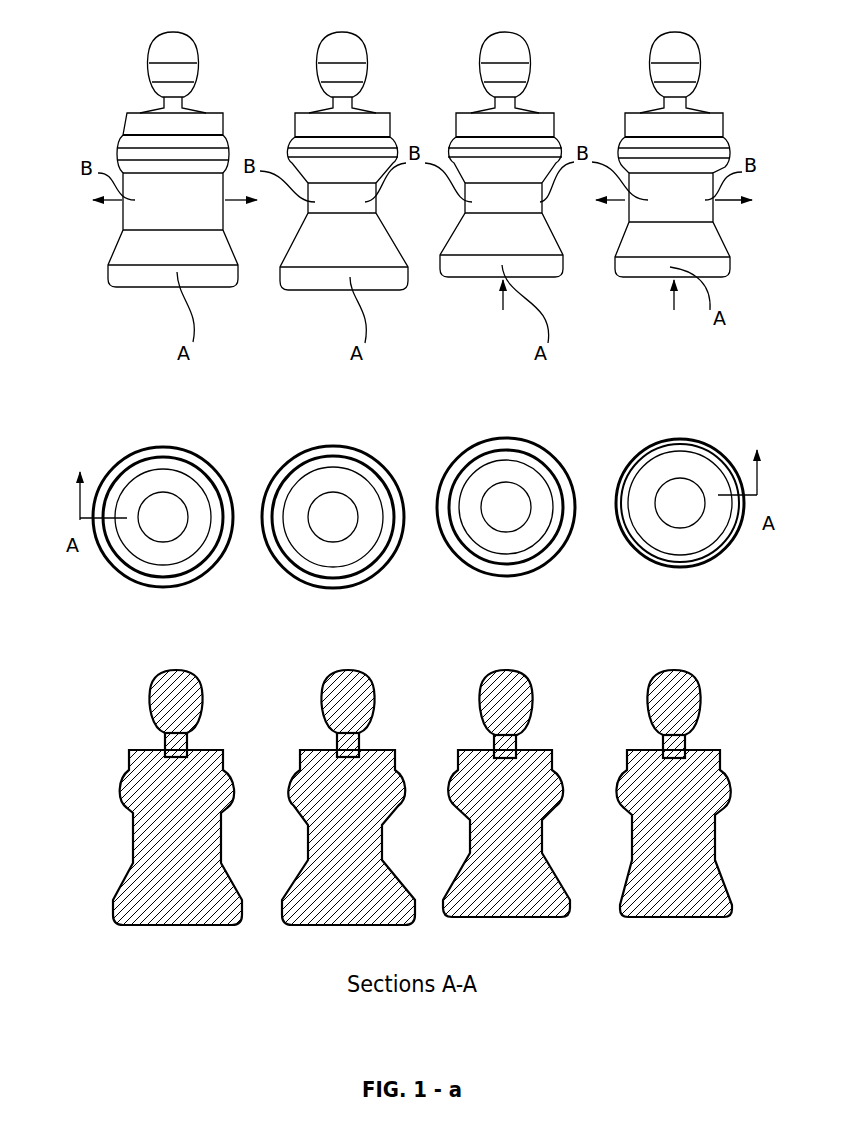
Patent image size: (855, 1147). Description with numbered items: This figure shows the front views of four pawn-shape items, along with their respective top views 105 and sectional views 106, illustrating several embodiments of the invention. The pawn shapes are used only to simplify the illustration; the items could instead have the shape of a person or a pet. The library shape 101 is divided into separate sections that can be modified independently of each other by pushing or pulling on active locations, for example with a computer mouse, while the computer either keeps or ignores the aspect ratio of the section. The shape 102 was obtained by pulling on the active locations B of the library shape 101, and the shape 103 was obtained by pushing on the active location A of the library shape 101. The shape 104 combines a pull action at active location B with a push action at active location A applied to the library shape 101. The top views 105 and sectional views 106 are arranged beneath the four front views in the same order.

The library shape 101 is at (304, 27).
The shape obtained by pulling on active locations B 102 is at (124, 44).
The shape obtained by pushing on active location A 103 is at (469, 27).
The shape obtained by combining pull on B with push on A 104 is at (644, 32).
The top views 105 is at (620, 557).
The sectional views 106 is at (250, 931).